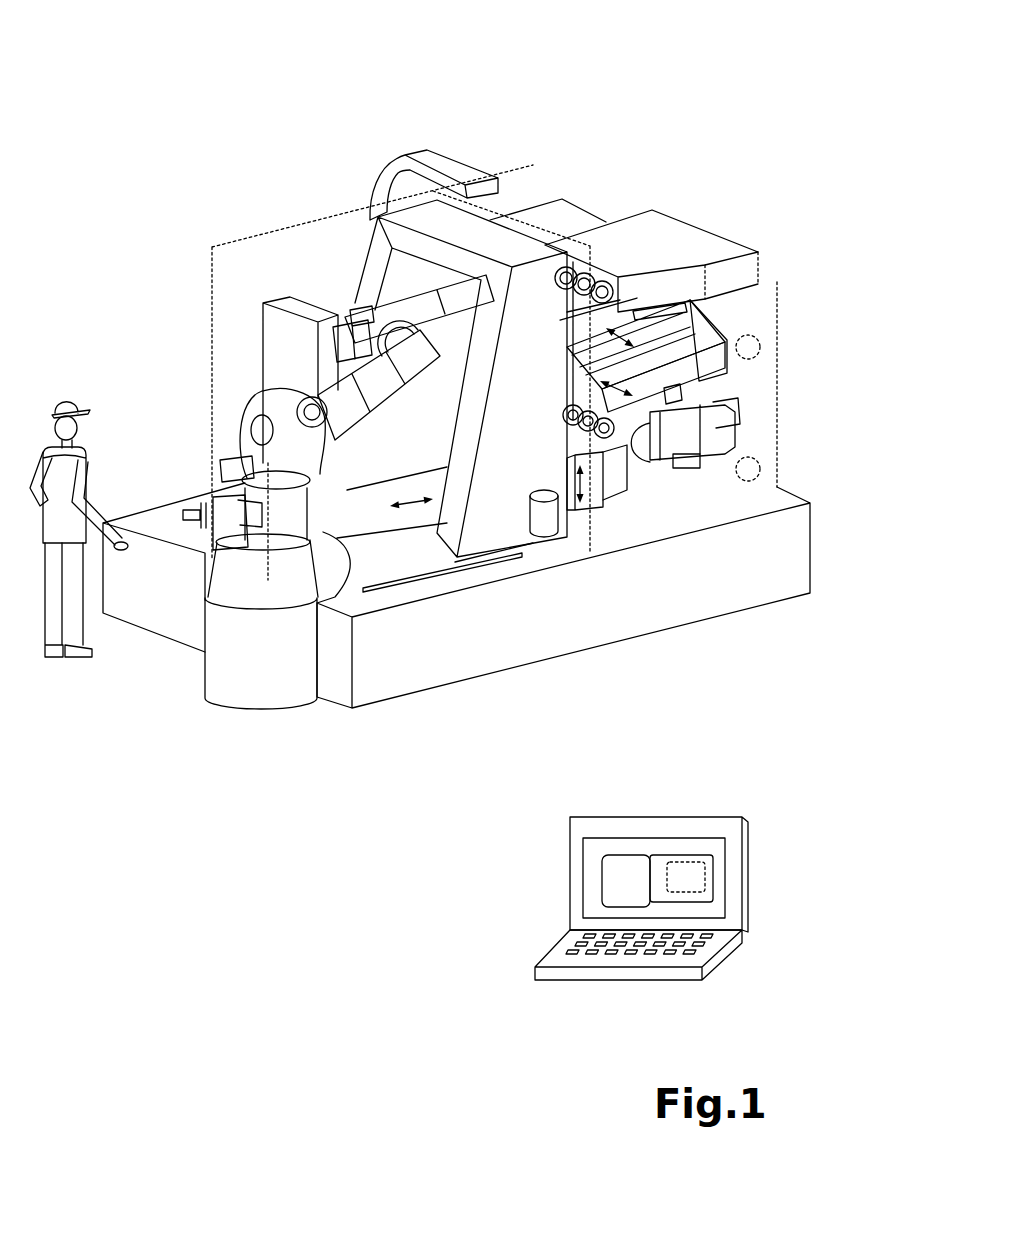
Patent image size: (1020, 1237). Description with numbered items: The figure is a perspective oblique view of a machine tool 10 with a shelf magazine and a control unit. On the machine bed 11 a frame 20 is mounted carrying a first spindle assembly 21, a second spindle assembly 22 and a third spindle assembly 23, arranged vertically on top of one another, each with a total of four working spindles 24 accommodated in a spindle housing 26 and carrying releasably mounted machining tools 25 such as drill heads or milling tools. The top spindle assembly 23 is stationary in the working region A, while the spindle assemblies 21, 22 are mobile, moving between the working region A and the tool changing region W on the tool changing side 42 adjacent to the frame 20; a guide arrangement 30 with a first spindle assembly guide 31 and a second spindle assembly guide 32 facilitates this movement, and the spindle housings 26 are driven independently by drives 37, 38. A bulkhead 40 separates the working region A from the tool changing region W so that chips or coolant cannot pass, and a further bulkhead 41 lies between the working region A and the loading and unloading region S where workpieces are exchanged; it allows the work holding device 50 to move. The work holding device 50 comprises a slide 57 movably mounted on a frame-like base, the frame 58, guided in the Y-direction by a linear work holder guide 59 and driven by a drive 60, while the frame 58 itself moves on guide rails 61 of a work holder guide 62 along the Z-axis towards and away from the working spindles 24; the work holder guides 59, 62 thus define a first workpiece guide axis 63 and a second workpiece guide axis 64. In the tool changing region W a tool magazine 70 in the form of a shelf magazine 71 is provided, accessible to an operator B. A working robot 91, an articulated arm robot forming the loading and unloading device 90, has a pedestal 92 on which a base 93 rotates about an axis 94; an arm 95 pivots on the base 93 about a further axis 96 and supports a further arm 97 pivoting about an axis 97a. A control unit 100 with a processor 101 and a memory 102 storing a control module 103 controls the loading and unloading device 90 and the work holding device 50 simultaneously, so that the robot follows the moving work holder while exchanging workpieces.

The machine tool 10 is at (162, 148).
The machine bed 11 is at (805, 548).
The frame 20 is at (786, 290).
The first spindle assembly 21 is at (670, 392).
The second spindle assembly 22 is at (607, 328).
The third spindle assembly 23 is at (683, 228).
The working spindles 24 is at (604, 438).
The machining tools 25 is at (601, 272).
The spindle housing 26 is at (632, 228).
The guide arrangement 30 is at (516, 560).
The first spindle assembly guide 31 is at (682, 468).
The second spindle assembly guide 32 is at (710, 330).
The drive 37 is at (762, 467).
The drive 38 is at (762, 347).
The bulkhead 40 is at (533, 195).
The further bulkhead 41 is at (590, 553).
The tool changing side 42 is at (366, 197).
The work holding device 50 is at (364, 215).
The slide 57 is at (582, 512).
The frame 58 is at (500, 522).
The work holder guide 59 is at (567, 480).
The drive 60 is at (543, 518).
The guide rails 61 is at (383, 592).
The work holder guide 62 is at (447, 590).
The first workpiece guide axis 63 is at (573, 470).
The second workpiece guide axis 64 is at (450, 540).
The tool magazine 70 is at (252, 315).
The shelf magazine 71 is at (268, 352).
The loading and unloading device 90 is at (274, 693).
The working robot 91 is at (224, 690).
The pedestal 92 is at (217, 675).
The base 93 is at (295, 518).
The axis 94 is at (268, 557).
The arm 95 is at (383, 407).
The further axis 96 is at (364, 439).
The further arm 97 is at (392, 317).
The axis 97a is at (477, 377).
The control unit 100 is at (694, 793).
The processor 101 is at (617, 867).
The memory 102 is at (662, 880).
The control module 103 is at (693, 860).
The working region A is at (578, 255).
The operator B is at (53, 664).
The loading and unloading region S is at (412, 512).
The tool changing region W is at (287, 207).